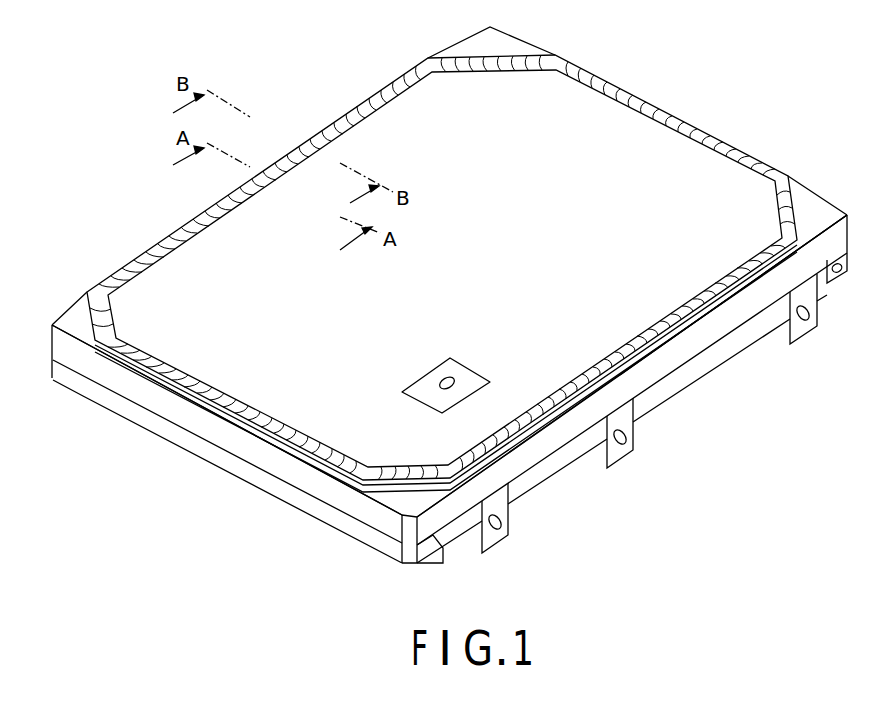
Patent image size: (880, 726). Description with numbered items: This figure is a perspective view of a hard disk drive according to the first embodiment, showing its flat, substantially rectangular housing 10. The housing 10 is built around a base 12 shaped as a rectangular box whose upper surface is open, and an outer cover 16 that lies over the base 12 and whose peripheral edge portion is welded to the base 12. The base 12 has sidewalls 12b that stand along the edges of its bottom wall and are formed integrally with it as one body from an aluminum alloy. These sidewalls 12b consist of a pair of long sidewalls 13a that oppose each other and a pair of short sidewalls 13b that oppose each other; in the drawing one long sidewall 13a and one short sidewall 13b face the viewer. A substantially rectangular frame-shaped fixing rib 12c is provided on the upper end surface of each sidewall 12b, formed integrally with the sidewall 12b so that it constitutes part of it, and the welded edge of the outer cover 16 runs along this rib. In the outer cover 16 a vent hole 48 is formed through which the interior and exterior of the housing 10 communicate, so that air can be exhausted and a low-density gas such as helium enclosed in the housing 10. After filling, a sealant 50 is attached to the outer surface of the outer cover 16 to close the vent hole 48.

The housing 10 is at (280, 113).
The base 12 is at (690, 382).
The sidewalls 12b is at (557, 483).
The fixing rib 12c is at (643, 367).
The long sidewalls 13a is at (733, 355).
The short sidewalls 13b is at (287, 493).
The outer cover 16 is at (613, 128).
The vent hole 48 is at (440, 388).
The sealant 50 is at (463, 367).